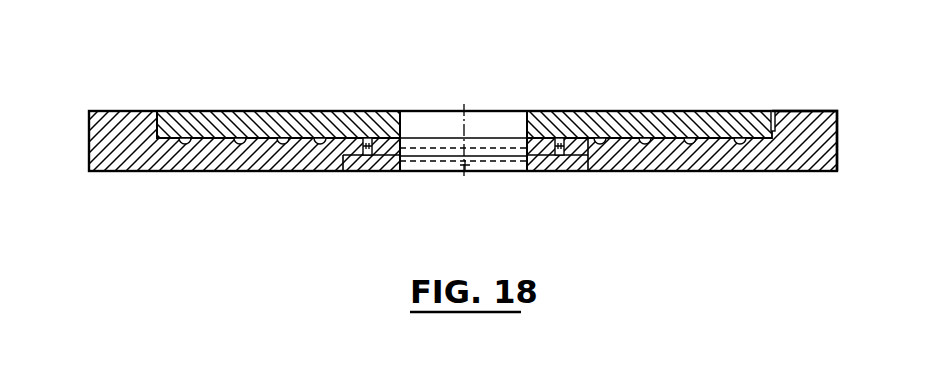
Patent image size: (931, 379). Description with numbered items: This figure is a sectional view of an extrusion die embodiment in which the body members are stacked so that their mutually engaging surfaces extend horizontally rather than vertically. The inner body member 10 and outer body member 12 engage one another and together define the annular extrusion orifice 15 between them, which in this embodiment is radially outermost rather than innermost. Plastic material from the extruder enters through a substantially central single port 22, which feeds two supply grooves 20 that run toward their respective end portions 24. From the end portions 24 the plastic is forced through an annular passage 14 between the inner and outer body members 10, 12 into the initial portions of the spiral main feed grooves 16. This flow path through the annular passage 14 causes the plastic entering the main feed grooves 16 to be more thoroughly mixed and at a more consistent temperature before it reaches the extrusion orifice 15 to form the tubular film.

The inner body member 10 is at (226, 160).
The outer body member 12 is at (675, 112).
The annular passage 14 is at (298, 137).
The annular extrusion orifice 15 is at (163, 139).
The main feed grooves 16 is at (651, 110).
The supply grooves 20 is at (365, 137).
The port 22 is at (466, 170).
The end portions 24 is at (330, 110).